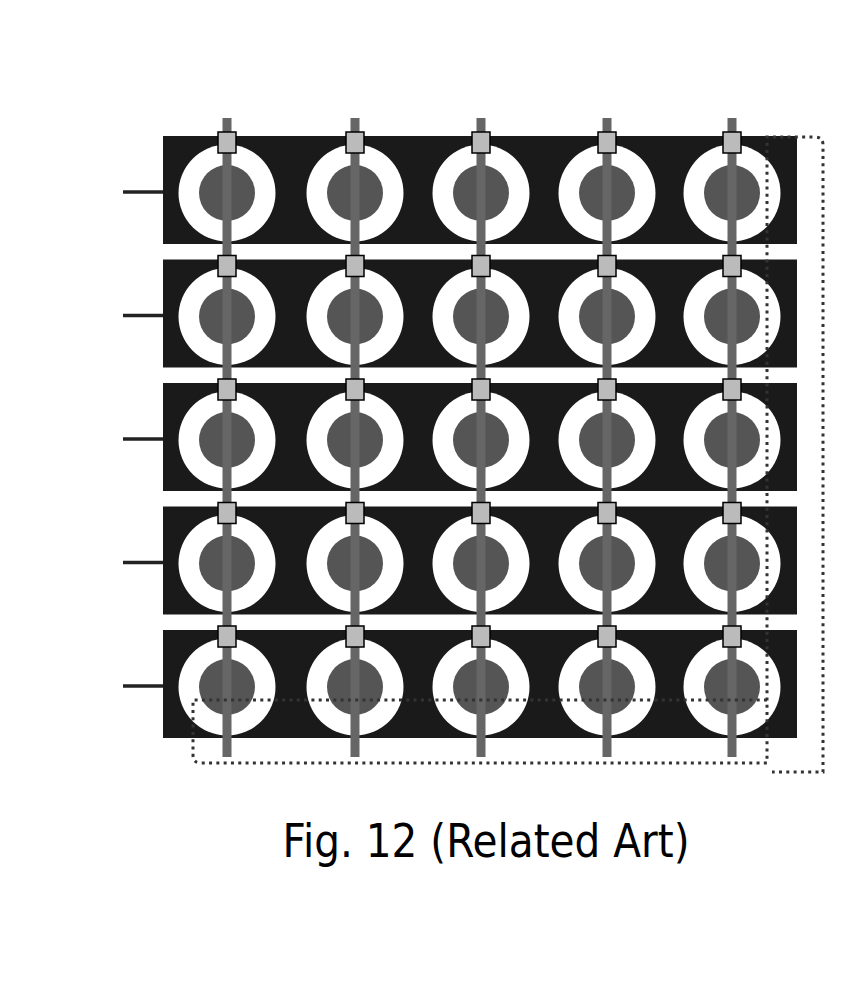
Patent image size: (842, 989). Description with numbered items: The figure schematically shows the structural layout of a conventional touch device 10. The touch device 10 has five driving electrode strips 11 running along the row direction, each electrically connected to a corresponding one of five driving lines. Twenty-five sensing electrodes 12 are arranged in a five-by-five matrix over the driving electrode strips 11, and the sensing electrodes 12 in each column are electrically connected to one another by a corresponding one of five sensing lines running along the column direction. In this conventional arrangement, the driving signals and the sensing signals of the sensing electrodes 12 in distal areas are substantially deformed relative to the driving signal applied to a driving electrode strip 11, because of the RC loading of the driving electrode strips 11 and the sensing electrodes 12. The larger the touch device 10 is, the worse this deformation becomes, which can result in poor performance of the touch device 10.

The touch device 10 is at (453, 48).
The driving electrode strip 11 is at (175, 163).
The sensing electrode 12 is at (215, 192).